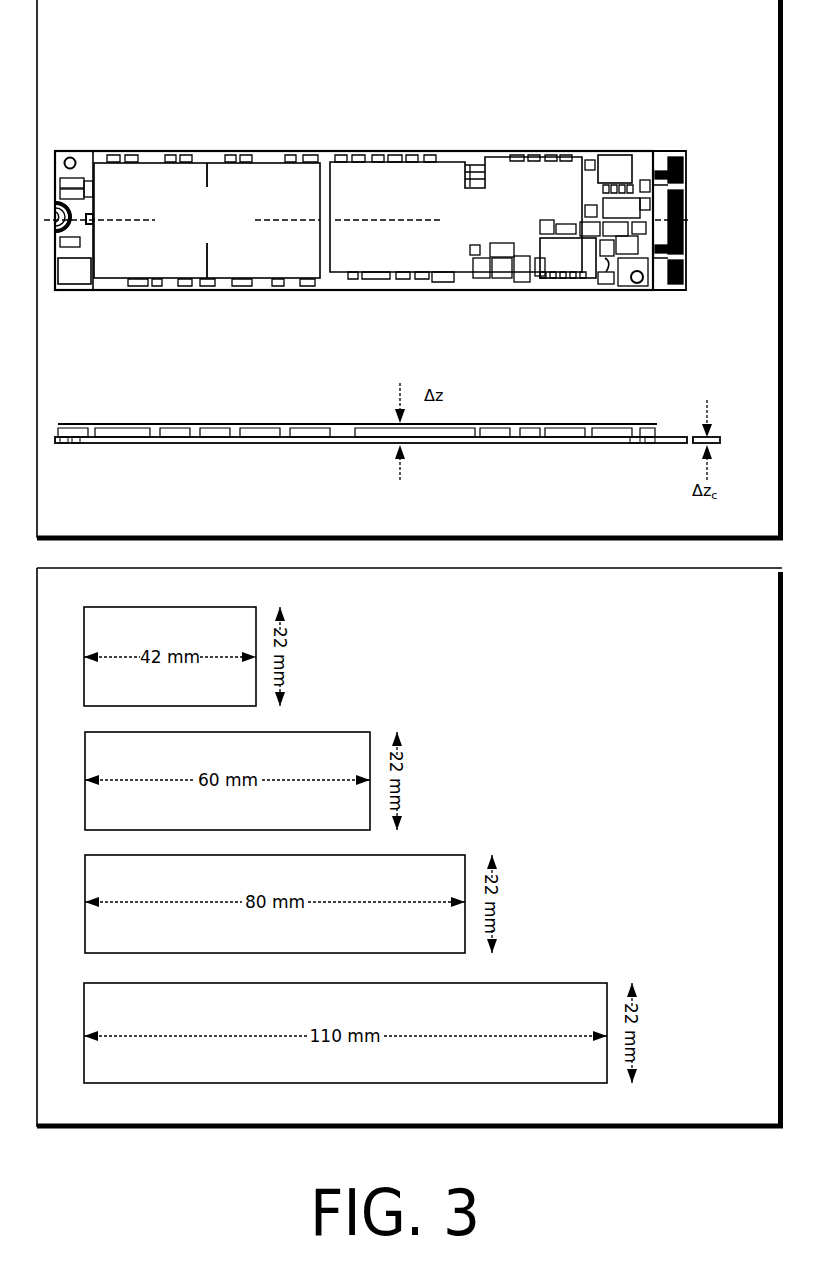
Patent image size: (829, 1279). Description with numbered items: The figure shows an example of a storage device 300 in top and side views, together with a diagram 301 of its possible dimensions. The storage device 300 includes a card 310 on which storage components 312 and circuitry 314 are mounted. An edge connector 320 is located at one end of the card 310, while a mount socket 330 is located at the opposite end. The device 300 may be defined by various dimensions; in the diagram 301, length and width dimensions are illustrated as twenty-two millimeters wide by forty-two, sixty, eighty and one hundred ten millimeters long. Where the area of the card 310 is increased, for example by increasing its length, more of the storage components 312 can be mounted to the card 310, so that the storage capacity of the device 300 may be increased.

The storage device 300 is at (228, 86).
The diagram 301 is at (691, 609).
The card 310 is at (445, 151).
The storage component 312 is at (195, 229).
The circuitry 314 is at (475, 229).
The edge connector 320 is at (685, 214).
The mount socket 330 is at (65, 238).